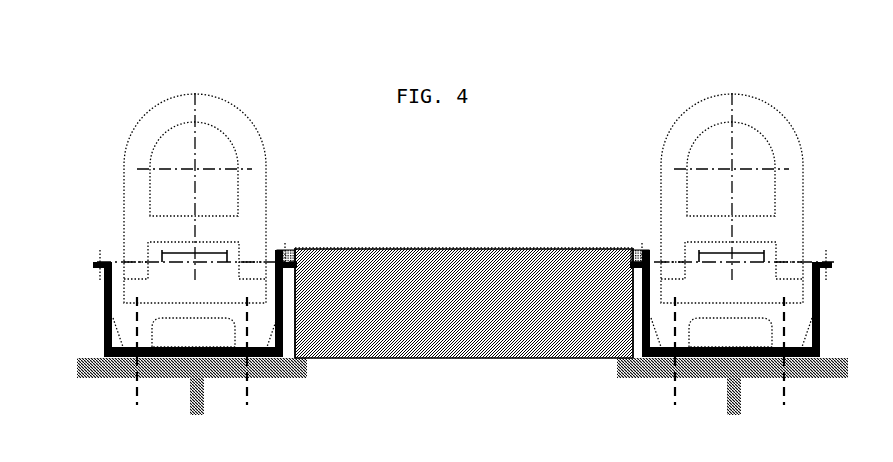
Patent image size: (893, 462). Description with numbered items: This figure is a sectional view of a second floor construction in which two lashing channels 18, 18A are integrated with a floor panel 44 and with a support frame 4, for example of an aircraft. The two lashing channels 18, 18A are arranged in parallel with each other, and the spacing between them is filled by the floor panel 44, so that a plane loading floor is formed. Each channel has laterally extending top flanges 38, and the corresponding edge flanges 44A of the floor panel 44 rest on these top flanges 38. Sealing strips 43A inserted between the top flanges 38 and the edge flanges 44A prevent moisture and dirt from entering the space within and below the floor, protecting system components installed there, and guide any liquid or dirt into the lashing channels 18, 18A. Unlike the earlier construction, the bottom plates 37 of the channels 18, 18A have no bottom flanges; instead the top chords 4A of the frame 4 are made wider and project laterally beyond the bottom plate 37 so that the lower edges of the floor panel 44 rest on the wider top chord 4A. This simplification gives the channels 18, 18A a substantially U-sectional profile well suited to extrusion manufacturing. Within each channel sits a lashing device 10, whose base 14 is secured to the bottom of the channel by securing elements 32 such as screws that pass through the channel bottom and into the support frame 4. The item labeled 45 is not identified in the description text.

The lashing device 10 is at (238, 99).
The mounting pad 45 is at (288, 243).
The sealing strip 43A is at (297, 248).
The edge flange 44A is at (281, 243).
The top flange 38 is at (96, 261).
The lashing channel 18 is at (85, 301).
The lashing channel 18A is at (829, 313).
The base 14 is at (105, 350).
The bottom plate 37 is at (170, 350).
The support frame 4 is at (207, 394).
The top chord 4A is at (310, 365).
The floor panel 44 is at (540, 318).
The securing element 32 is at (673, 379).